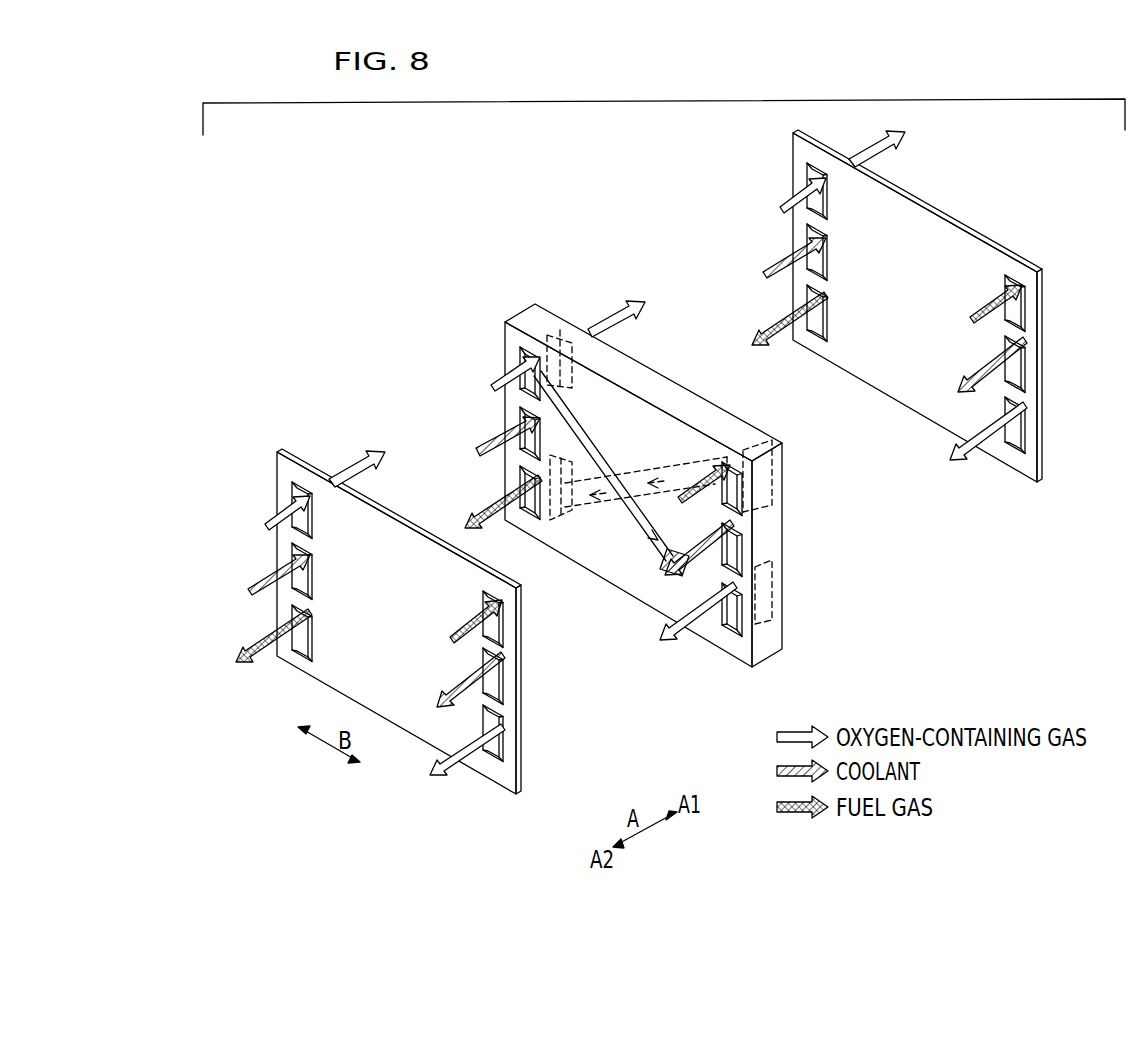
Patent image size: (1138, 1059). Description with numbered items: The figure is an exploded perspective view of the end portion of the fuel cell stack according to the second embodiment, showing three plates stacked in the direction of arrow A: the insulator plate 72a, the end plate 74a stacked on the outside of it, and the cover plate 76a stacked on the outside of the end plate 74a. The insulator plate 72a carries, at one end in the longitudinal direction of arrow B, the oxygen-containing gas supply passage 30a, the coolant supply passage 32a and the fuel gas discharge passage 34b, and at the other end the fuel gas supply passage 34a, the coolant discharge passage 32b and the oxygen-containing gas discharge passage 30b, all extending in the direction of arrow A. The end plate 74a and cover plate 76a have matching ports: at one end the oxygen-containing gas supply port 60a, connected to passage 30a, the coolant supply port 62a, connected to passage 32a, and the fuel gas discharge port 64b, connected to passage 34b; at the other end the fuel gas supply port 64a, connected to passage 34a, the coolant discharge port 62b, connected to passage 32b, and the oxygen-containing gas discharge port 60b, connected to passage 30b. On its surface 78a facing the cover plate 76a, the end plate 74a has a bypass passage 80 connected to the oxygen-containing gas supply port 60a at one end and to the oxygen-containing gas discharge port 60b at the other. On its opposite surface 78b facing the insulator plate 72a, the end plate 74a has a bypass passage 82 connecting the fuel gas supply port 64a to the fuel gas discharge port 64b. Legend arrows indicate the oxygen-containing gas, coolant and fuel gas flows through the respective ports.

The insulator plate 72a is at (997, 242).
The end plate 74a is at (518, 312).
The cover plate 76a is at (277, 447).
The surface 78a is at (627, 585).
The surface 78b is at (685, 392).
The bypass passage 80 is at (660, 555).
The bypass passage 82 is at (652, 476).
The oxygen-containing gas supply passage 30a is at (808, 177).
The oxygen-containing gas discharge passage 30b is at (1029, 441).
The coolant supply passage 32a is at (808, 236).
The coolant discharge passage 32b is at (1029, 381).
The fuel gas supply passage 34a is at (1029, 323).
The fuel gas discharge passage 34b is at (808, 298).
The oxygen-containing gas supply port 60a is at (292, 495).
The oxygen-containing gas discharge port 60b is at (511, 751).
The coolant supply port 62a is at (292, 556).
The coolant discharge port 62b is at (511, 690).
The fuel gas supply port 64a is at (511, 633).
The fuel gas discharge port 64b is at (292, 618).